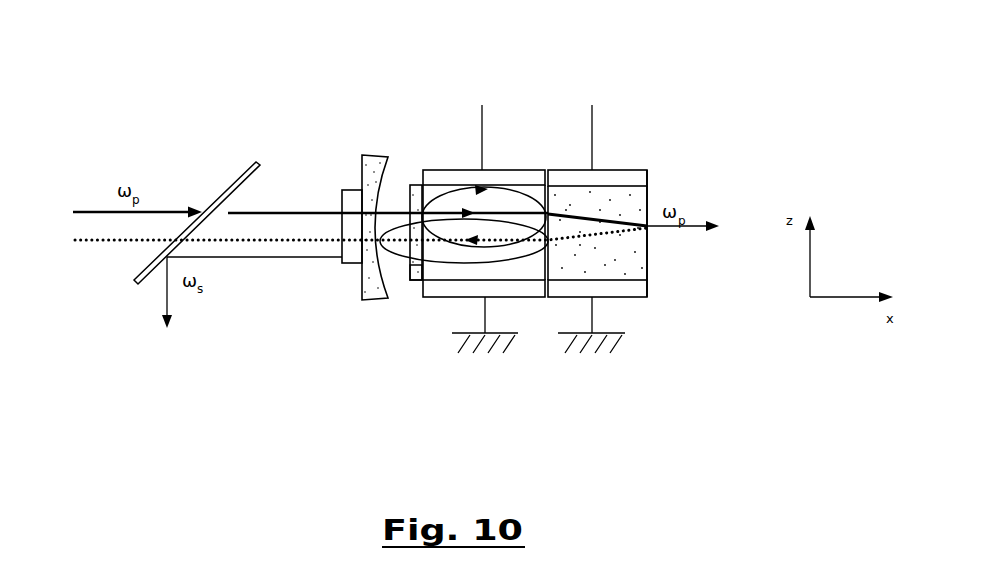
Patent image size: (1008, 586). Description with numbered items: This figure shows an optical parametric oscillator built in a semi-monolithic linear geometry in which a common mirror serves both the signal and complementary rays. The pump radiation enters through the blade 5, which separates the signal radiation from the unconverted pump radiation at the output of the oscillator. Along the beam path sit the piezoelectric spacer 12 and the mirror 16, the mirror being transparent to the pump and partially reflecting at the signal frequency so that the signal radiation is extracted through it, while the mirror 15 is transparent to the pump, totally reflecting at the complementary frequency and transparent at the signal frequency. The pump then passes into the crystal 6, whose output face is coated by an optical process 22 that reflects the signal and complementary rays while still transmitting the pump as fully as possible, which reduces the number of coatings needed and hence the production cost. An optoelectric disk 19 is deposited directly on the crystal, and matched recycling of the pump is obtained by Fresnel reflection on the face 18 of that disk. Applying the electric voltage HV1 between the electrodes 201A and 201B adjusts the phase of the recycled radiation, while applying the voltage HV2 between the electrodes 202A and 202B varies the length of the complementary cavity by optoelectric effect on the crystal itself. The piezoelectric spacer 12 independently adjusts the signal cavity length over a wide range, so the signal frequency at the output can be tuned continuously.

The blade 5 is at (235, 185).
The piezoelectric spacer 12 is at (358, 263).
The mirror 16 is at (375, 155).
The crystal 6 is at (429, 270).
The mirror 15 is at (422, 282).
The electrode 202A is at (453, 170).
The electrode 202B is at (495, 292).
The voltage HV2 is at (487, 125).
The electric voltage HV1 is at (605, 125).
The optical process 22 is at (533, 172).
The electrode 201A is at (603, 172).
The electrode 201B is at (622, 292).
The optoelectric disk 19 is at (620, 198).
The face 18 is at (648, 197).